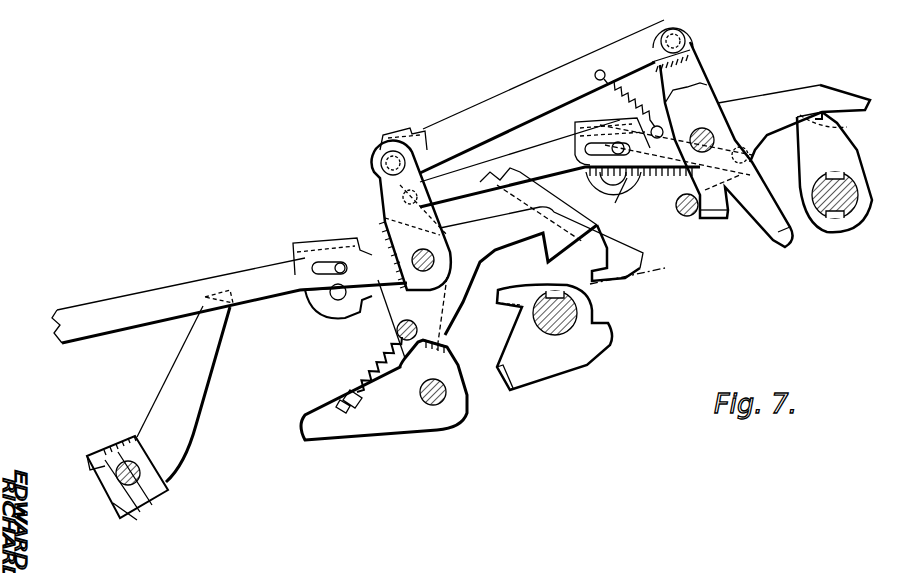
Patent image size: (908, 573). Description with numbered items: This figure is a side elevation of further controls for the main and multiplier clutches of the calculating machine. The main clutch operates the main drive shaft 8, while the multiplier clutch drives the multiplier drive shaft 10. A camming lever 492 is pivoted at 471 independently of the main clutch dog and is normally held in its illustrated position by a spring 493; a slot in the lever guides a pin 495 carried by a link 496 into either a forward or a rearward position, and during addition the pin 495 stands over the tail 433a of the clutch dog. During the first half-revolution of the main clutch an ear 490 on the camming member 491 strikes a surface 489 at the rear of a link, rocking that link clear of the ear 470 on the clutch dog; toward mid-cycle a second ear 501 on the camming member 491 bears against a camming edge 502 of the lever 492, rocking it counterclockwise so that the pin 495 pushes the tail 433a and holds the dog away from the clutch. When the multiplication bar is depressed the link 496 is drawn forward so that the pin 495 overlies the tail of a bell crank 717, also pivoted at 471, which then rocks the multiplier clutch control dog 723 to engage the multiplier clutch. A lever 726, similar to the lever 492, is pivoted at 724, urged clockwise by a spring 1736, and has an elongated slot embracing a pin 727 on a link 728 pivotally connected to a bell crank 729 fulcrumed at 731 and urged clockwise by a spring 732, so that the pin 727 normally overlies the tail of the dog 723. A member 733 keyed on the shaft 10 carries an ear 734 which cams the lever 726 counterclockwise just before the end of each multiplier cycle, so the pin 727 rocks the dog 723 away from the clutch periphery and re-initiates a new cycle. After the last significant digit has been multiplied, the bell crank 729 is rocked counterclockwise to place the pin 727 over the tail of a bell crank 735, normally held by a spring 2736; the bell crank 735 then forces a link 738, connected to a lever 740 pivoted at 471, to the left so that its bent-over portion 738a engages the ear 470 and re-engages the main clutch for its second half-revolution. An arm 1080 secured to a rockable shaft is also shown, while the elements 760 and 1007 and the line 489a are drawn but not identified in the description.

The main drive shaft 8 is at (578, 313).
The multiplier drive shaft 10 is at (858, 189).
The ear 470 is at (380, 178).
The pivot 471 is at (433, 256).
The surface 489 is at (652, 260).
The stop line 489a is at (648, 270).
The ear 490 is at (610, 323).
The camming member 491 is at (595, 343).
The camming lever 492 is at (492, 258).
The spring 493 is at (453, 318).
The pin 495 is at (322, 302).
The link 496 is at (280, 257).
The ear 501 is at (503, 388).
The camming edge 502 is at (553, 255).
The bell crank 717 is at (322, 305).
The multiplier clutch control dog 723 is at (612, 203).
The pivot 724 is at (713, 136).
The lever 726 is at (822, 92).
The pin 727 is at (590, 153).
The link 728 is at (523, 160).
The bell crank 729 is at (412, 428).
The fulcrum 731 is at (443, 403).
The spring 732 is at (362, 384).
The member 733 is at (840, 158).
The ear 734 is at (842, 126).
The bell crank 735 is at (708, 74).
The link 738 is at (538, 89).
The bent over portion 738a is at (423, 131).
The lever 740 is at (385, 202).
The block 760 is at (153, 493).
The arm tip 1007 is at (774, 240).
The arm 1080 is at (198, 406).
The spring 1736 is at (710, 215).
The spring 2736 is at (748, 170).
The tail 433a is at (323, 302).